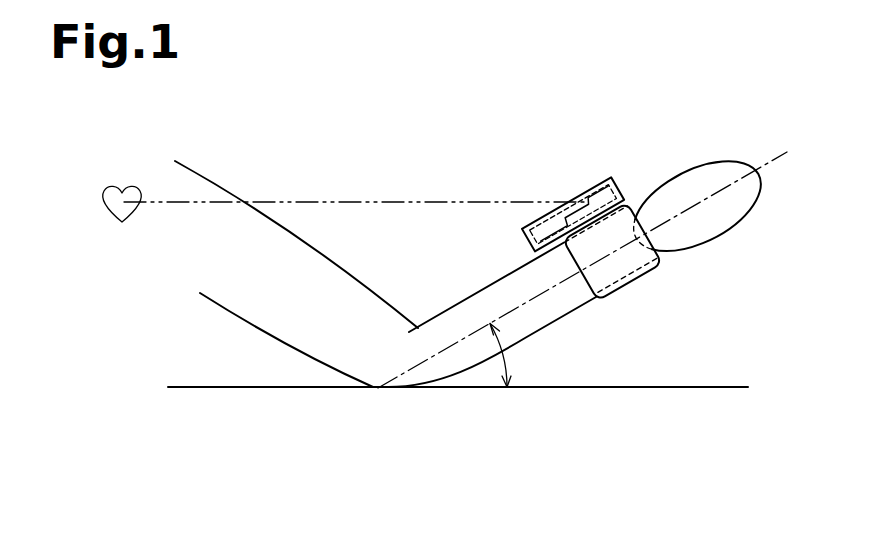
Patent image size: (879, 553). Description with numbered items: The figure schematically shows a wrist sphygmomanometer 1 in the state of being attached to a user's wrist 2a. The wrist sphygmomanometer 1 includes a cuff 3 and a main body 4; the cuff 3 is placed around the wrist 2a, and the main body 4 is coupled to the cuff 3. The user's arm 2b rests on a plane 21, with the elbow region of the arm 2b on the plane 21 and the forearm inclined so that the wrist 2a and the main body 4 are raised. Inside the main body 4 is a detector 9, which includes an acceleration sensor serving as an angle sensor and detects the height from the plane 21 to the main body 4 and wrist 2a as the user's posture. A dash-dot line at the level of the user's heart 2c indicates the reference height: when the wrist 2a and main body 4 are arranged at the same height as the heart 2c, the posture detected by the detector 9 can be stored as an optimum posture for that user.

The wrist sphygmomanometer 1 is at (570, 215).
The wrist 2a is at (634, 218).
The arm 2b is at (410, 389).
The heart 2c is at (106, 202).
The cuff 3 is at (612, 252).
The main body 4 is at (573, 214).
The detector 9 is at (574, 213).
The plane 21 is at (571, 386).